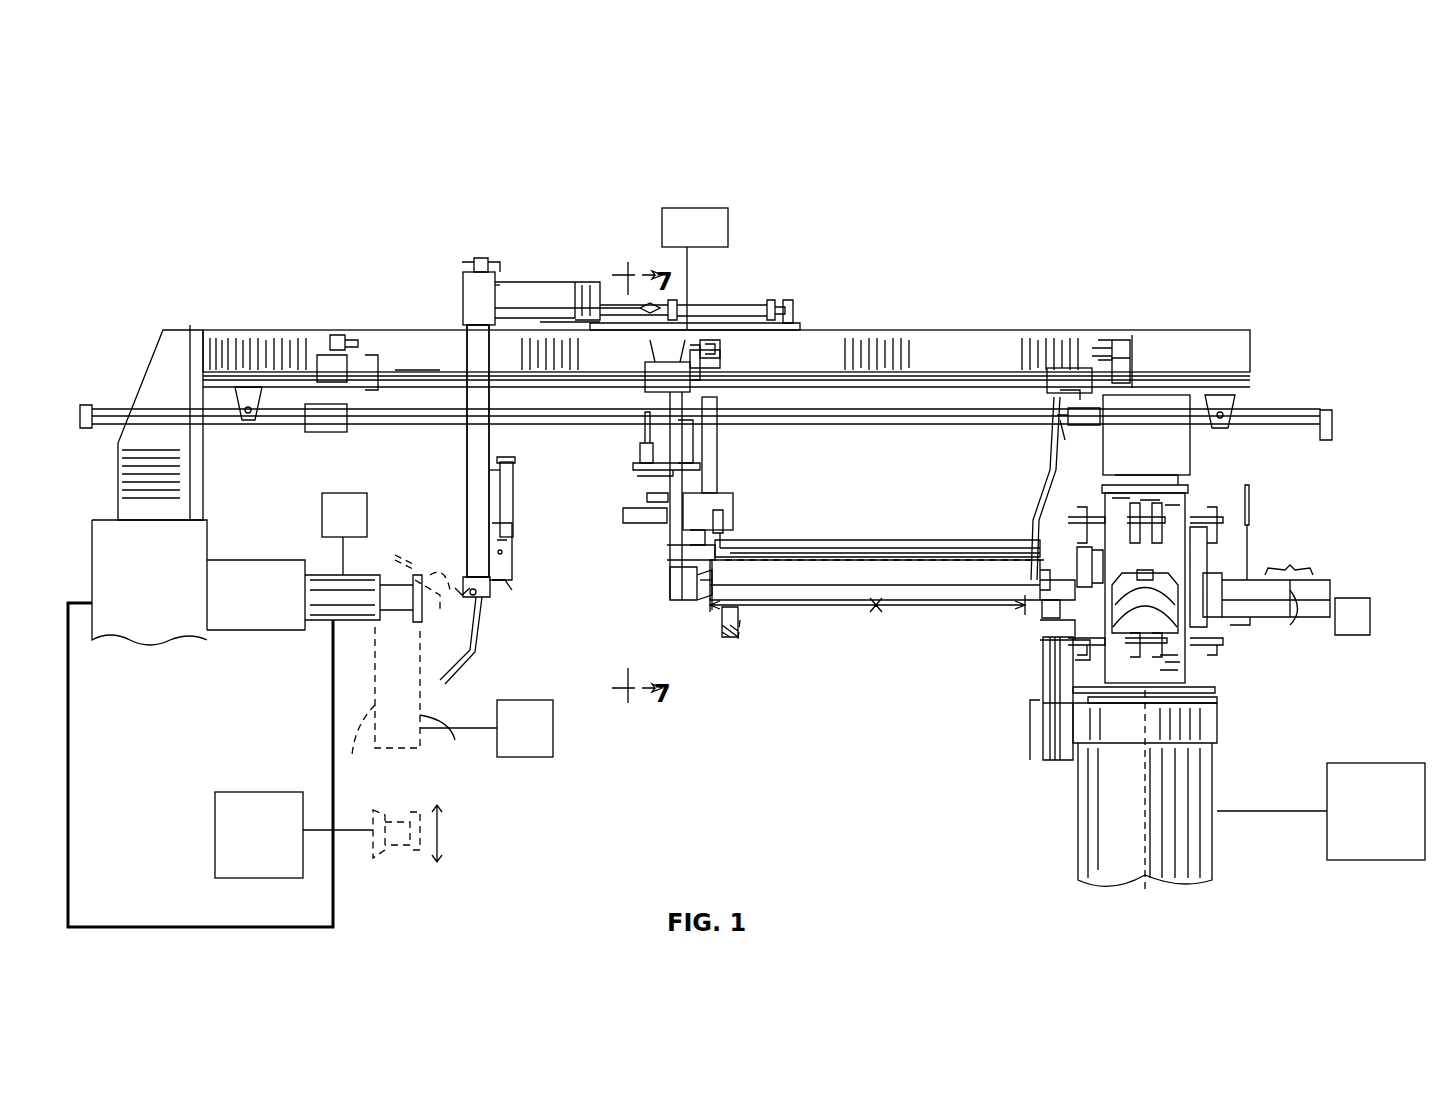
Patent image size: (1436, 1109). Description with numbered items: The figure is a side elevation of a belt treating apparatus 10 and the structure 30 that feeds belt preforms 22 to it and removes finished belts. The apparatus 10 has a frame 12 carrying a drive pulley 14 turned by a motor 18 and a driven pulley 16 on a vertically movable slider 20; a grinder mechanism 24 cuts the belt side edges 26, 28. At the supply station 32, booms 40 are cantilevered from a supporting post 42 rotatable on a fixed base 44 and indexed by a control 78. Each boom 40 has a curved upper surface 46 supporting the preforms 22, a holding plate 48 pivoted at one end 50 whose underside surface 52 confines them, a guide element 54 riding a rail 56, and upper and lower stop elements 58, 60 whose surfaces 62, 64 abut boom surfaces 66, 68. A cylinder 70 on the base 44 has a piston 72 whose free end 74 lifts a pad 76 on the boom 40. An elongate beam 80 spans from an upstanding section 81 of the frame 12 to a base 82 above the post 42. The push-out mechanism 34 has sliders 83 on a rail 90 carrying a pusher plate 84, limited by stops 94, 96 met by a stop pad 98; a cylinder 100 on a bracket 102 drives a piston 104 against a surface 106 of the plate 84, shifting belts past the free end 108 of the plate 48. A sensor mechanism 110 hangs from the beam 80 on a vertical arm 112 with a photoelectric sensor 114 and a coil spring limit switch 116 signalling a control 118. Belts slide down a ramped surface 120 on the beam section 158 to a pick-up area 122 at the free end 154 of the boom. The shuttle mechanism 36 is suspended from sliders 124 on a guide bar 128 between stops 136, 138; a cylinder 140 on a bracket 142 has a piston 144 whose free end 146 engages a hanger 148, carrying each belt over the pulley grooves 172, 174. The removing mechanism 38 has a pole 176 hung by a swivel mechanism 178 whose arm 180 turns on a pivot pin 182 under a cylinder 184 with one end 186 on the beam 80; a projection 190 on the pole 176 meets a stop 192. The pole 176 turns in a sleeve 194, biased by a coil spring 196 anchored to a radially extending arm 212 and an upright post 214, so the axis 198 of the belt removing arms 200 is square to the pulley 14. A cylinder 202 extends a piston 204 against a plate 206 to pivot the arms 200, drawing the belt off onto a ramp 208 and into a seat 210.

The belt treating apparatus 10 is at (200, 765).
The frame 12 is at (198, 582).
The drive pulley 14 is at (385, 615).
The driven pulley 16 is at (375, 845).
The motor 18 is at (344, 534).
The slider 20 is at (294, 835).
The belt preform 22 is at (1020, 555).
The grinder mechanism 24 is at (525, 728).
The belt side edge 26 is at (440, 738).
The belt side edge 28 is at (355, 740).
The delivery structure 30 is at (915, 252).
The supply station 32 is at (1368, 508).
The belt push-out mechanism 34 is at (1028, 441).
The belt shuttle mechanism 36 is at (612, 455).
The belt removing mechanism 38 is at (458, 465).
The belt carrier boom 40 is at (925, 560).
The supporting post 42 is at (1175, 682).
The fixed base 44 is at (1145, 790).
The curved upper surface 46 is at (810, 550).
The holding plate 48 is at (862, 545).
The boom end 50 is at (1040, 565).
The underside surface 52 is at (895, 553).
The guide element 54 is at (1095, 585).
The rail 56 is at (1098, 620).
The upper stop element 58 is at (1085, 520).
The lower stop element 60 is at (1215, 640).
The downwardly facing surfaces 62 is at (1220, 548).
The cushioned surfaces 64 is at (1078, 625).
The upwardly facing surface 66 is at (1250, 572).
The downwardly facing surface 68 is at (1040, 615).
The cylinder 70 is at (1050, 760).
The reciprocating piston 72 is at (1080, 640).
The free end 74 is at (1051, 591).
The pad 76 is at (1040, 575).
The control 78 is at (1321, 811).
The elongate beam 80 is at (830, 345).
The upstanding frame section 81 is at (160, 422).
The base 82 is at (1146, 444).
The sliders 83 is at (1062, 370).
The pusher plate 84 is at (1030, 510).
The rail 90 is at (905, 385).
The stop 94 is at (1120, 345).
The stop 96 is at (725, 353).
The stop pad 98 is at (1098, 350).
The cylinder 100 is at (1290, 410).
The bracket 102 is at (1232, 400).
The reciprocating piston 104 is at (1058, 432).
The surface 106 is at (1060, 404).
The free end 108 is at (720, 552).
The sensor mechanism 110 is at (755, 490).
The vertical arm 112 is at (720, 440).
The photoelectric sensor 114 is at (690, 540).
The coil spring limit switch 116 is at (700, 548).
The control 118 is at (695, 269).
The ramped surface 120 is at (722, 540).
The pick-up area 122 is at (678, 600).
The sliders 124 is at (667, 366).
The guide bar 128 is at (412, 372).
The stop 136 is at (335, 335).
The stop 138 is at (718, 345).
The cylinder 140 is at (282, 428).
The bracket 142 is at (248, 385).
The piston 144 is at (372, 385).
The free end 146 is at (660, 413).
The hanger 148 is at (670, 440).
The boom free end 154 is at (665, 585).
The beam section 158 is at (688, 605).
The pulley groove 172 is at (395, 575).
The pulley groove 174 is at (395, 845).
The pole 176 is at (468, 512).
The swivel mechanism 178 is at (547, 220).
The arm 180 is at (545, 290).
The pivot pin 182 is at (598, 310).
The cylinder 184 is at (790, 300).
The cylinder end 186 is at (800, 328).
The projection 190 is at (508, 320).
The stop 192 is at (665, 300).
The sleeve 194 is at (462, 290).
The coil spring 196 is at (494, 268).
The axis of rotation 198 is at (478, 598).
The belt removing arms 200 is at (450, 675).
The cylinder 202 is at (510, 490).
The piston 204 is at (512, 558).
The plate 206 is at (495, 580).
The ramp 208 is at (440, 575).
The seat 210 is at (455, 600).
The radially extending arm 212 is at (470, 258).
The upright post 214 is at (505, 280).